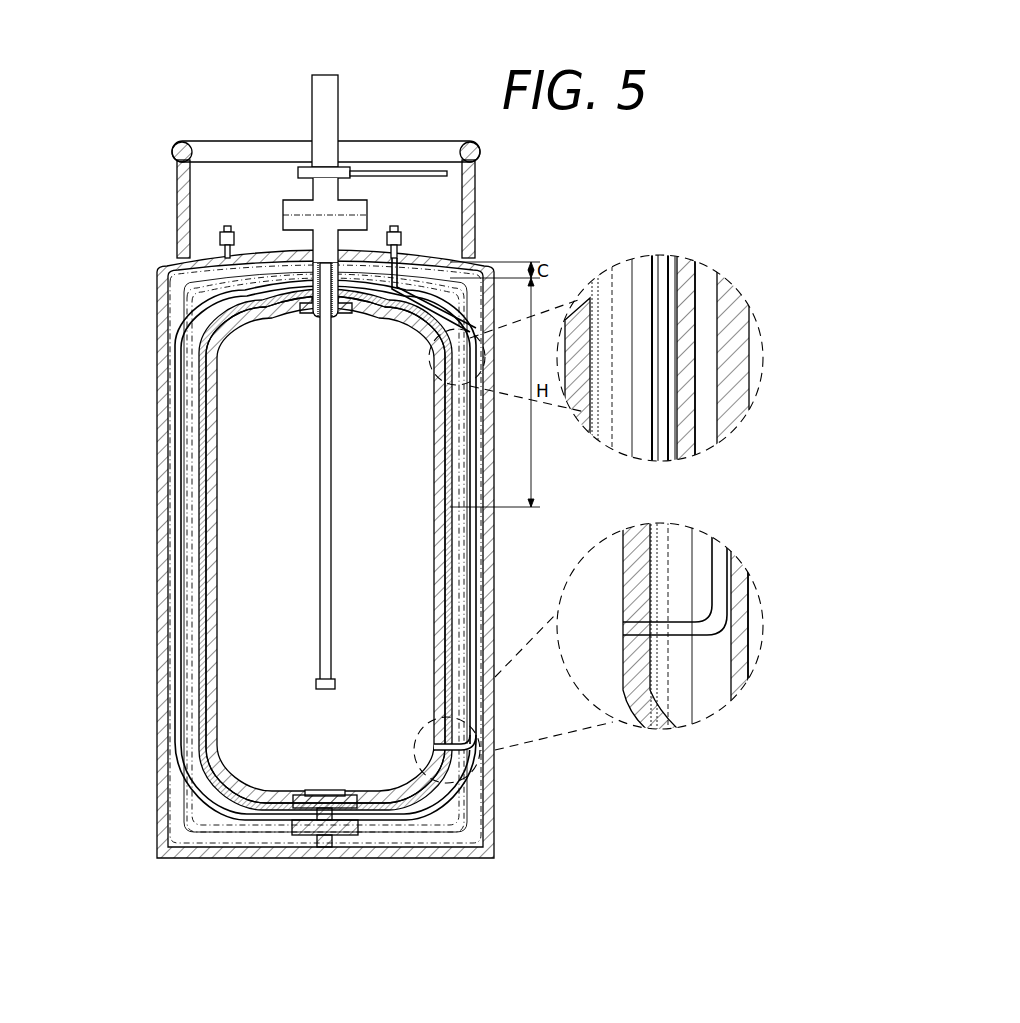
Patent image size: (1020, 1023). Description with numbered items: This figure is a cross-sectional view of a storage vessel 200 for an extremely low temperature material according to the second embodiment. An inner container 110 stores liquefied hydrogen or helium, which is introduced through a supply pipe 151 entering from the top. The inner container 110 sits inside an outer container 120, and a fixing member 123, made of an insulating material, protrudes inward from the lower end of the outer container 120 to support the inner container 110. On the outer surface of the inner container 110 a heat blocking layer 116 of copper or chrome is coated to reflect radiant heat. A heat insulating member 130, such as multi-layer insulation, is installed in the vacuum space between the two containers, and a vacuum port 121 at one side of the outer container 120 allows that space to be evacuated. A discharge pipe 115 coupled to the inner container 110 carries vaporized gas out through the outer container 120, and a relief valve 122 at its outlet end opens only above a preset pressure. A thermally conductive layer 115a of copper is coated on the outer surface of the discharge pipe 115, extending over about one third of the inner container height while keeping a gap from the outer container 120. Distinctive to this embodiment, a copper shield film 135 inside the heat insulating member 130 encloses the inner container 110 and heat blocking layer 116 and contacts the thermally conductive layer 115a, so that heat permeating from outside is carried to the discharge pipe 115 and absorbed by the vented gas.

The storage vessel 200 is at (341, 44).
The supply pipe 151 is at (323, 112).
The vacuum port 121 is at (222, 237).
The relief valve 122 is at (400, 243).
The shield film 135 is at (182, 457).
The heat insulating member 130 is at (192, 508).
The outer container 120 is at (162, 563).
The heat blocking layer 116 is at (206, 616).
The inner container 110 is at (214, 712).
The fixing member 123 is at (327, 849).
The discharge pipe 115 is at (686, 455).
The thermally conductive layer 115a is at (676, 398).